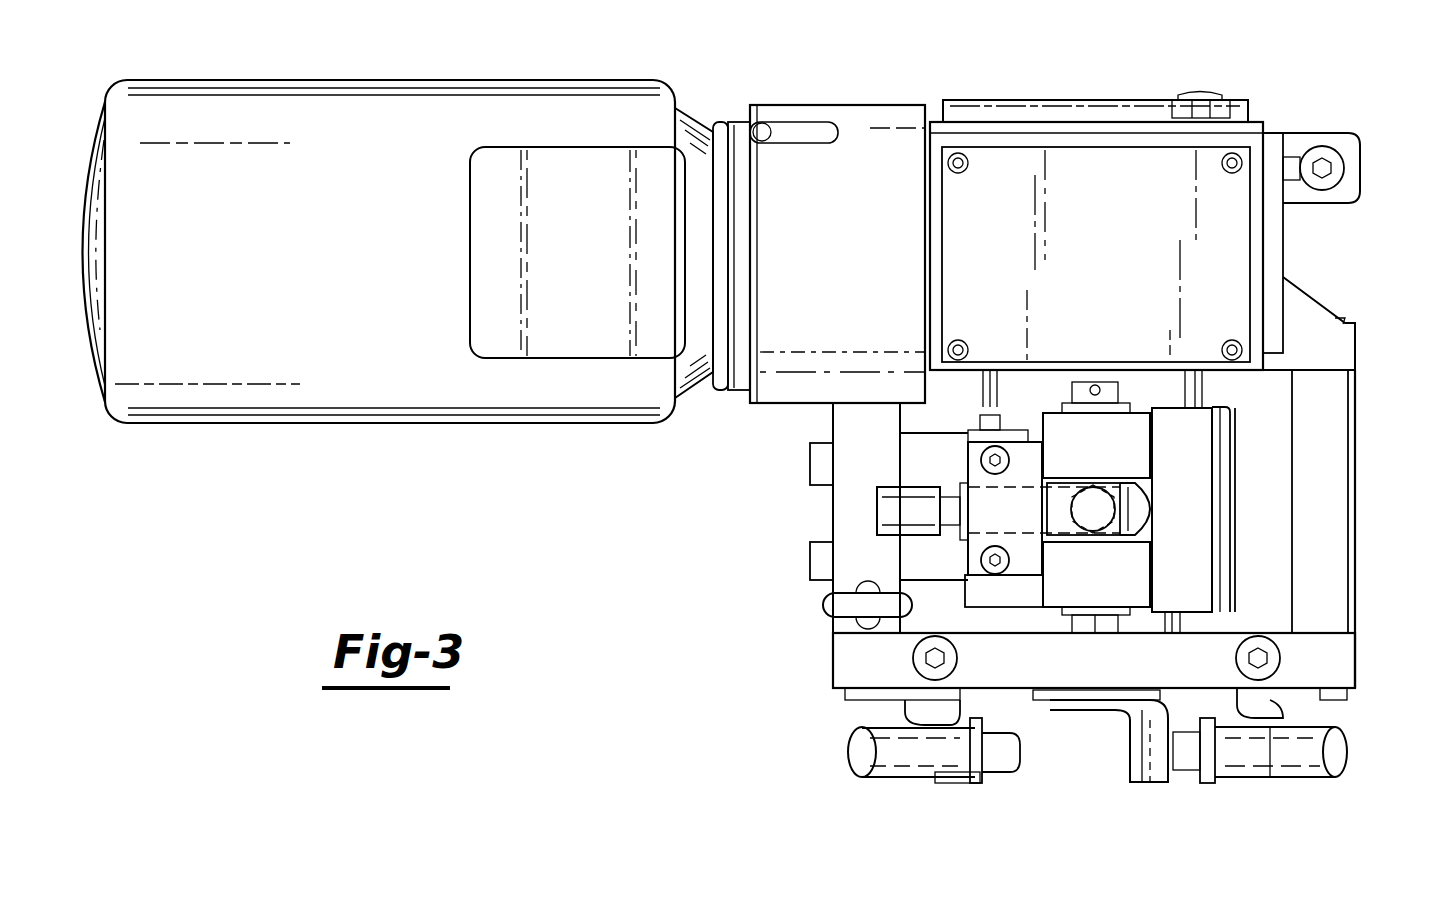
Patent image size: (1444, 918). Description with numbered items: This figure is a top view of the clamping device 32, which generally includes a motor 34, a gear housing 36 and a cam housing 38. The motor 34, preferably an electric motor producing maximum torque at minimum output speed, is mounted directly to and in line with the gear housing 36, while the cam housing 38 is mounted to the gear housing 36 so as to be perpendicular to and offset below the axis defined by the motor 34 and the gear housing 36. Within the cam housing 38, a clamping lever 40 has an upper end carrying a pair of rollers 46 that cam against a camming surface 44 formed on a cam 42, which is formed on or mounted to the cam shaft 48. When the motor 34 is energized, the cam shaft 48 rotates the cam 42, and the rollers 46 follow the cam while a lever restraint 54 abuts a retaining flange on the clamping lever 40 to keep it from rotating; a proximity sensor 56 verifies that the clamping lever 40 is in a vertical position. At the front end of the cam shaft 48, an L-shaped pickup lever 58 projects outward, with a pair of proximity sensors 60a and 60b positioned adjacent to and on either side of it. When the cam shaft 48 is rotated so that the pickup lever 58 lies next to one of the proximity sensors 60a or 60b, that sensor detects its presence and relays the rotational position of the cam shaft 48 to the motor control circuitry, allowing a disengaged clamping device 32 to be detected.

The clamping device 32 is at (462, 64).
The motor 34 is at (340, 390).
The gear housing 36 is at (1123, 160).
The cam housing 38 is at (1338, 513).
The clamping lever 40 is at (1173, 515).
The cam 42 is at (1207, 465).
The camming surface 44 is at (1237, 435).
The rollers 46 is at (1138, 428).
The cam shaft 48 is at (1033, 700).
The lever restraint 54 is at (988, 522).
The proximity sensor 56 is at (877, 503).
The pickup lever 58 is at (1158, 765).
The proximity sensor 60a is at (897, 760).
The proximity sensor 60b is at (1297, 752).